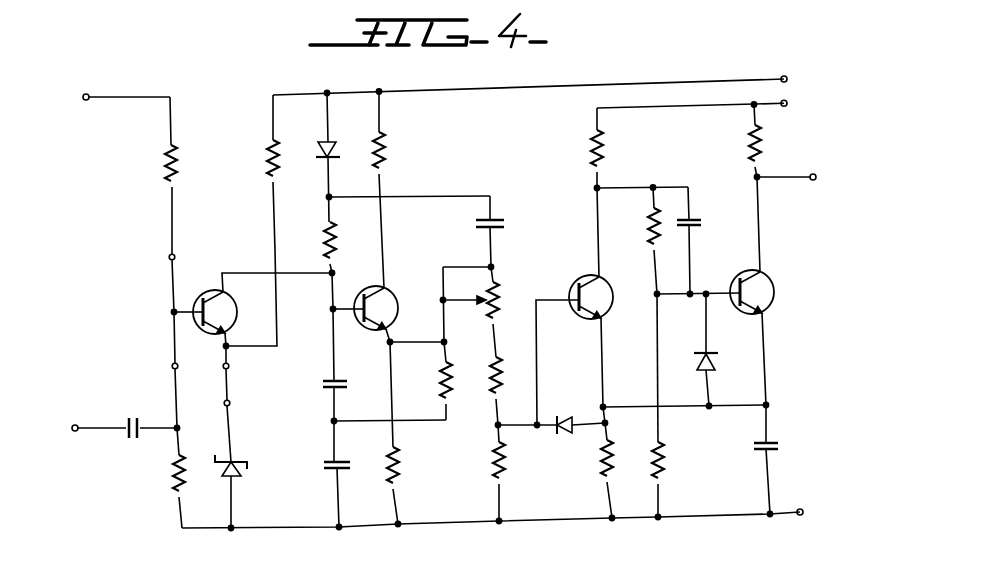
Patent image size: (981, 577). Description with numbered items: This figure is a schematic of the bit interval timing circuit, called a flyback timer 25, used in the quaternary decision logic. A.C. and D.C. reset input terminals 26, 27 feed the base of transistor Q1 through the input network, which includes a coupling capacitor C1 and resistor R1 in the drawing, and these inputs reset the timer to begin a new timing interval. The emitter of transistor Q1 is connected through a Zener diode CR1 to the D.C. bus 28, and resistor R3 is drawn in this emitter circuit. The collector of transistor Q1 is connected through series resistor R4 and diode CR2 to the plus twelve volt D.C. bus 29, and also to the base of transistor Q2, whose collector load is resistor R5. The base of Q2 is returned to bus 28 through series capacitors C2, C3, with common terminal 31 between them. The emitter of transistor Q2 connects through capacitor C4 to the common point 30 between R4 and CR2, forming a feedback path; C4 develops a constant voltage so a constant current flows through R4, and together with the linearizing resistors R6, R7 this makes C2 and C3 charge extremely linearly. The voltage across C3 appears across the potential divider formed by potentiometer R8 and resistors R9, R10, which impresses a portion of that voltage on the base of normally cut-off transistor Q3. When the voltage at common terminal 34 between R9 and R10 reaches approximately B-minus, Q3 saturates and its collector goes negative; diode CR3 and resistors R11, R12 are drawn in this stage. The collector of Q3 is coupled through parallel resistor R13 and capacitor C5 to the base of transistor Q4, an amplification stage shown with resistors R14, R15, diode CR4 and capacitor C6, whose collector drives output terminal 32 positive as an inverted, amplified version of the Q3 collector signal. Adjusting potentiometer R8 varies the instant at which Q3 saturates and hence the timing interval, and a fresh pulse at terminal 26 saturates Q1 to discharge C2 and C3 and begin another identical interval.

The flyback timer 25 is at (237, 87).
The A.C. reset input terminal 26 is at (73, 437).
The D.C. reset input terminal 27 is at (86, 101).
The D.C. bus 28 is at (302, 529).
The +12 volt D.C. bus 29 is at (366, 92).
The common point 30 is at (327, 198).
The common terminal 31 is at (332, 422).
The output terminal 32 is at (815, 174).
The common terminal 34 is at (495, 428).
The resistor R1 is at (166, 160).
The resistor R3 is at (266, 160).
The resistor R4 is at (322, 242).
The resistor R5 is at (386, 150).
The resistor R6 is at (400, 466).
The resistor R7 is at (442, 383).
The potentiometer R8 is at (501, 298).
The resistor R9 is at (491, 384).
The resistor R10 is at (494, 469).
The resistor R11 is at (590, 150).
The resistor R12 is at (600, 464).
The resistor R13 is at (639, 241).
The resistor R14 is at (666, 462).
The resistor R15 is at (747, 144).
The capacitor C1 is at (131, 441).
The capacitor C2 is at (322, 385).
The capacitor C3 is at (348, 470).
The capacitor C4 is at (508, 233).
The capacitor C5 is at (704, 231).
The capacitor C6 is at (784, 453).
The Zener diode CR1 is at (240, 474).
The diode CR2 is at (320, 148).
The diode CR3 is at (579, 407).
The diode CR4 is at (713, 361).
The transistor Q1 is at (218, 312).
The transistor Q2 is at (396, 306).
The transistor Q3 is at (579, 318).
The transistor Q4 is at (775, 290).